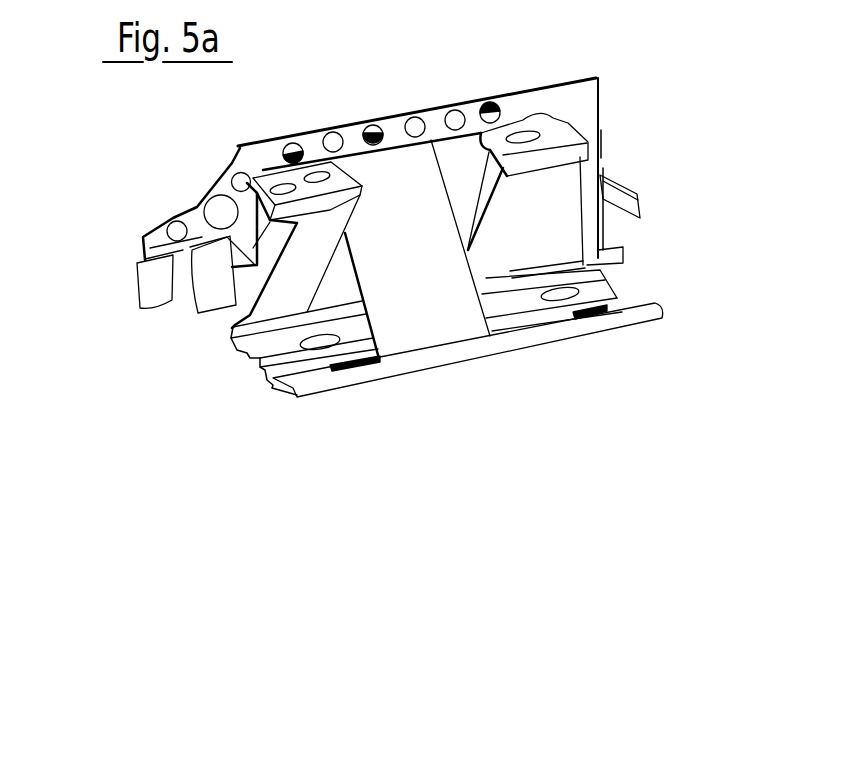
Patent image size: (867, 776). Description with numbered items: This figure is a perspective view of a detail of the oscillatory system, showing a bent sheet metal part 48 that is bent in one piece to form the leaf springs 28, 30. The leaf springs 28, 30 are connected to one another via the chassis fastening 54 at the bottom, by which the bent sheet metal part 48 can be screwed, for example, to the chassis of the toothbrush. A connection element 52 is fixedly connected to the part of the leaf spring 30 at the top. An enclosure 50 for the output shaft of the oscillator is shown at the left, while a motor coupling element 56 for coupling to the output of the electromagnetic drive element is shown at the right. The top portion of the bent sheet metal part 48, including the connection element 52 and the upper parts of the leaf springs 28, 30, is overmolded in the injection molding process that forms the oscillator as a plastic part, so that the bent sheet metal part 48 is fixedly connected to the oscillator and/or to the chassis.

The bent sheet metal part 48 is at (132, 158).
The connection element 52 is at (517, 103).
The leaf springs 28 is at (535, 190).
The motor coupling element 56 is at (634, 192).
The enclosure for the output shaft 50 is at (148, 287).
The leaf spring 30 is at (403, 332).
The chassis fastening 54 is at (532, 347).